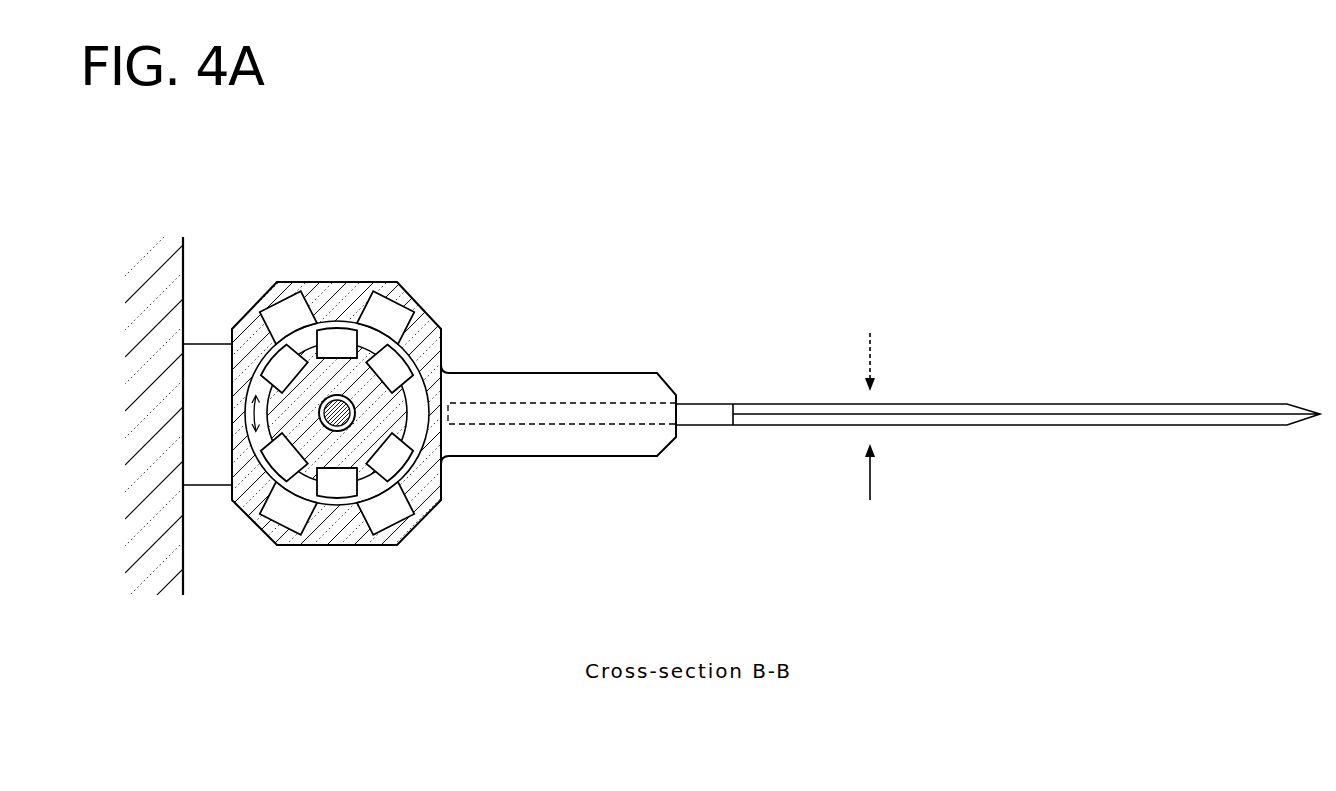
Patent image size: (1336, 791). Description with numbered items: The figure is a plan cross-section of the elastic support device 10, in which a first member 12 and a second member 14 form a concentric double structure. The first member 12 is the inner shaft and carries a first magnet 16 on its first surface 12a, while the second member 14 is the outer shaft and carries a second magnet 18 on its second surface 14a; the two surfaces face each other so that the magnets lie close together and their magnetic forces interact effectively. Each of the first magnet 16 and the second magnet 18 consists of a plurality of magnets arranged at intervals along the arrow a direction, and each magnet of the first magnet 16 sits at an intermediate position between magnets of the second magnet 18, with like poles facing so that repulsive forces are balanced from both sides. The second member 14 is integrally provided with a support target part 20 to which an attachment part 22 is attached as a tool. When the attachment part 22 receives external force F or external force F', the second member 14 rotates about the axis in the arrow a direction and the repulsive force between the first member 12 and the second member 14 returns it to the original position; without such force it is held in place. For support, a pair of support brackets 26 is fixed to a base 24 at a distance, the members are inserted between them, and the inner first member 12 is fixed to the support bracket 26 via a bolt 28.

The elastic support device 10 is at (711, 177).
The first member 12 is at (365, 468).
The first surface 12a is at (429, 418).
The second member 14 is at (342, 282).
The second surface 14a is at (443, 368).
The first magnet 16 is at (413, 460).
The second magnet 18 is at (407, 316).
The support target part 20 is at (627, 373).
The attachment part 22 is at (1053, 404).
The base 24 is at (157, 572).
The support bracket 26 is at (207, 357).
The bolt 28 is at (317, 420).
The arrow a direction a is at (257, 410).
The external force F is at (896, 472).
The external force F' is at (895, 362).